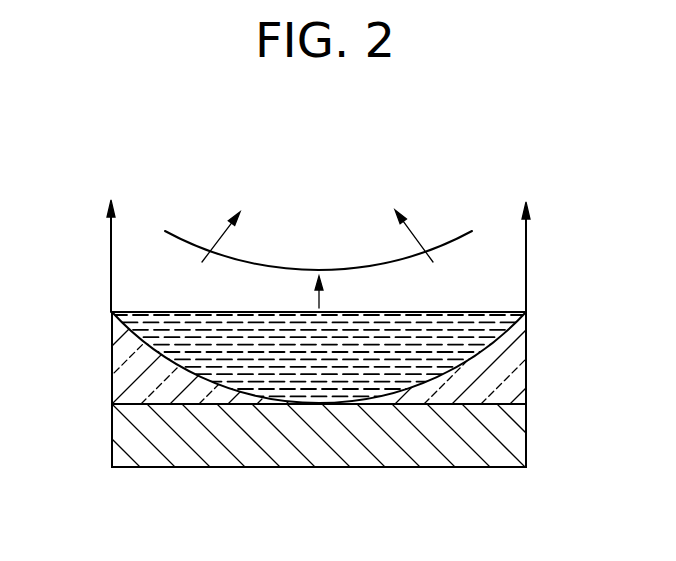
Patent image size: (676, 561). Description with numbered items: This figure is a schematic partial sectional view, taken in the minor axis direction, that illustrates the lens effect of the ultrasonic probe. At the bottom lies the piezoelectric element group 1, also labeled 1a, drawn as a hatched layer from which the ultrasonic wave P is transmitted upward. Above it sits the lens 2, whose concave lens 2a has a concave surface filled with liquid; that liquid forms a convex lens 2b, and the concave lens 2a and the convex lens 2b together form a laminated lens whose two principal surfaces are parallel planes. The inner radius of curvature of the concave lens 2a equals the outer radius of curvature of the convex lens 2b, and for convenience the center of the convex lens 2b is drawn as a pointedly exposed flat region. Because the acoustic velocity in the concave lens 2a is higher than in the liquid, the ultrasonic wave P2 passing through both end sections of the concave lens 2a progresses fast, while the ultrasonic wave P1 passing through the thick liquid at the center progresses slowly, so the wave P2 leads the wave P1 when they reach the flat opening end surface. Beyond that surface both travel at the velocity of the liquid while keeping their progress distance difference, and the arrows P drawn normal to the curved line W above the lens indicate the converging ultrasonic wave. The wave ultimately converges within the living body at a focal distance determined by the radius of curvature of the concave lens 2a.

The piezoelectric element group 1 is at (318, 471).
The substrate surface 1a is at (433, 467).
The resin layer (2a: resin layer) 2 is at (357, 421).
The concave lens 2a is at (145, 383).
The convex lens 2b is at (460, 360).
The workpiece / wafer W is at (447, 238).
The ultrasonic wave P is at (317, 235).
The ultrasonic wave in the center section P1 is at (333, 292).
The ultrasonic wave at both end sections P2 is at (111, 250).